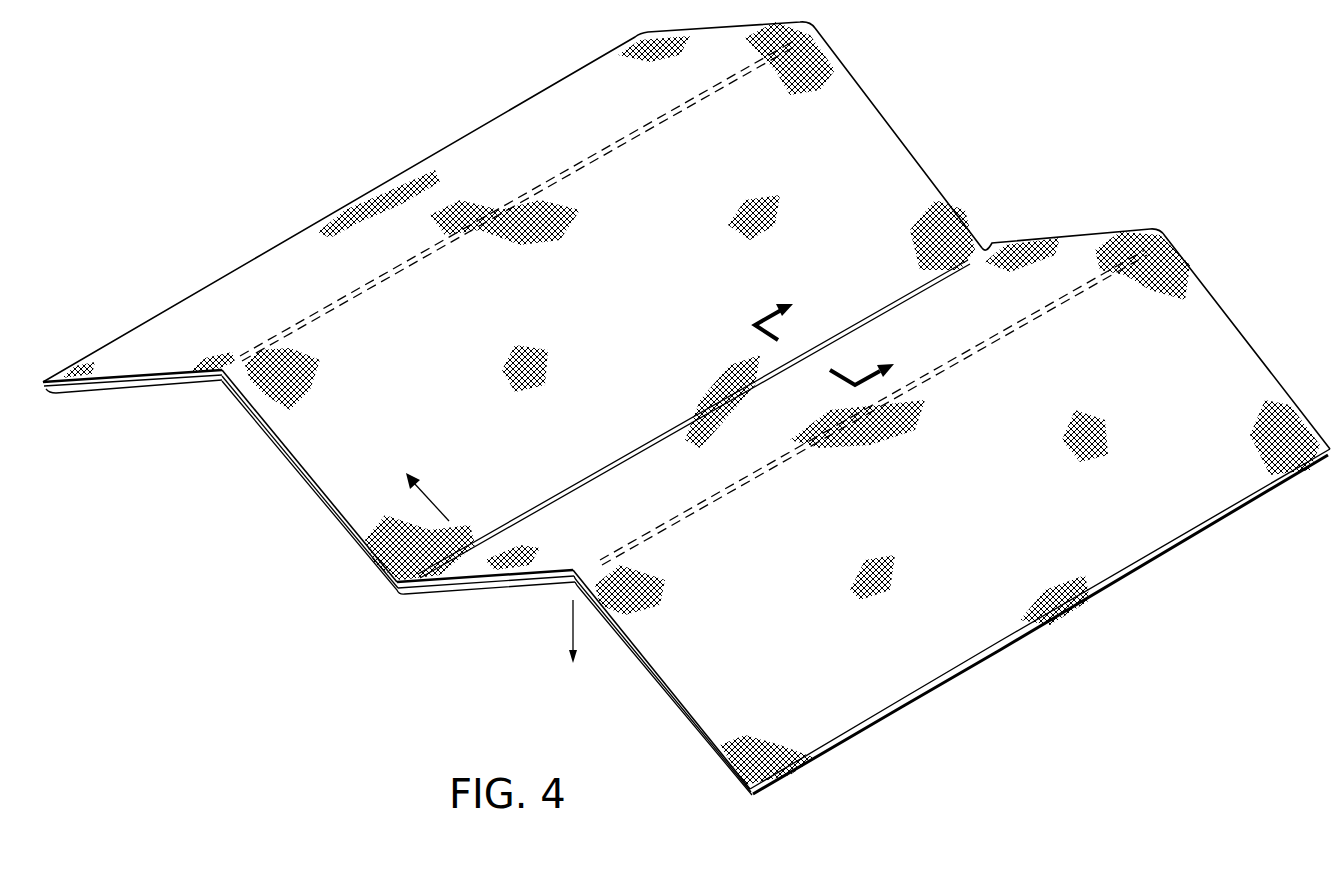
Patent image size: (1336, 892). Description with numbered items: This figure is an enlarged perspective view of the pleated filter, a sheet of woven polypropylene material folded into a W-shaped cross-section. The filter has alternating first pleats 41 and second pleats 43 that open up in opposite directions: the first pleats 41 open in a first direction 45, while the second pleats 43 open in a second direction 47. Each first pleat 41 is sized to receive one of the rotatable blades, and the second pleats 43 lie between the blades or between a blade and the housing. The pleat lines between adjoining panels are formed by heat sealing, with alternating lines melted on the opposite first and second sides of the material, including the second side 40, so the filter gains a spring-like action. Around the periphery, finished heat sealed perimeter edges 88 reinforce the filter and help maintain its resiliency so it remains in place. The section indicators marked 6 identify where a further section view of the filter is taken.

The second side 40 is at (872, 121).
The first pleats 41 is at (527, 572).
The second pleats 43 is at (630, 136).
The first direction 45 is at (572, 622).
The second direction 47 is at (427, 495).
The heat sealed perimeter edges 88 is at (1193, 270).
The section line 6 is at (838, 327).